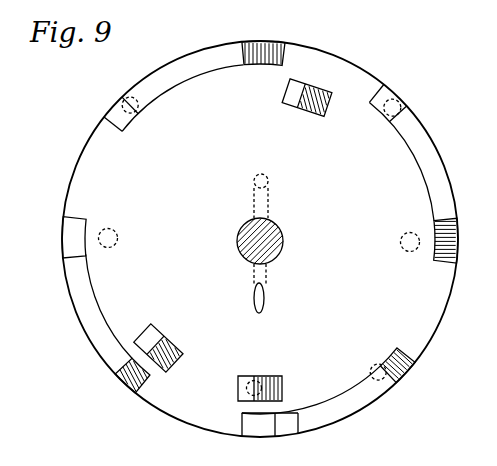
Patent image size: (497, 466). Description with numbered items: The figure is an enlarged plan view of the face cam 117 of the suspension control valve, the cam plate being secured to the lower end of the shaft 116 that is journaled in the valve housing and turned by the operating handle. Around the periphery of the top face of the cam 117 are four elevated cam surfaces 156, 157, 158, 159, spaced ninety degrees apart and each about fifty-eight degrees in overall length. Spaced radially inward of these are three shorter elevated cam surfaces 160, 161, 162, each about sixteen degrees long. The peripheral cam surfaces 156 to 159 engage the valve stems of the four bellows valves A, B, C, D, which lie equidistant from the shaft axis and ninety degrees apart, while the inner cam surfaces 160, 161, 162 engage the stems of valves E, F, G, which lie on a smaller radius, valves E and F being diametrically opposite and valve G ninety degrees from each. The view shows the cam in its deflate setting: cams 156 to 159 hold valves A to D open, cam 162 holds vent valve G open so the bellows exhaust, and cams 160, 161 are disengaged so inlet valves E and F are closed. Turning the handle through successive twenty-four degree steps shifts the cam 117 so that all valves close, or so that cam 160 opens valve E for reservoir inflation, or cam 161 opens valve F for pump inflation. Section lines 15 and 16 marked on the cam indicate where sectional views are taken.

The section line 15- 15 is at (374, 409).
The section line 16- 16 is at (270, 404).
The shaft 116 is at (245, 220).
The face cam 117 is at (83, 158).
The elevated cam surface 156 is at (193, 72).
The elevated cam surface 157 is at (424, 160).
The elevated cam surface 158 is at (93, 308).
The elevated cam surface 159 is at (340, 393).
The elevated cam surface 160 is at (164, 335).
The elevated cam surface 161 is at (305, 102).
The elevated cam surface 162 is at (277, 375).
The valve A is at (146, 105).
The valve B is at (397, 119).
The valve C is at (124, 358).
The valve D is at (374, 372).
The valve E is at (116, 244).
The valve F is at (403, 249).
The valve G is at (254, 380).